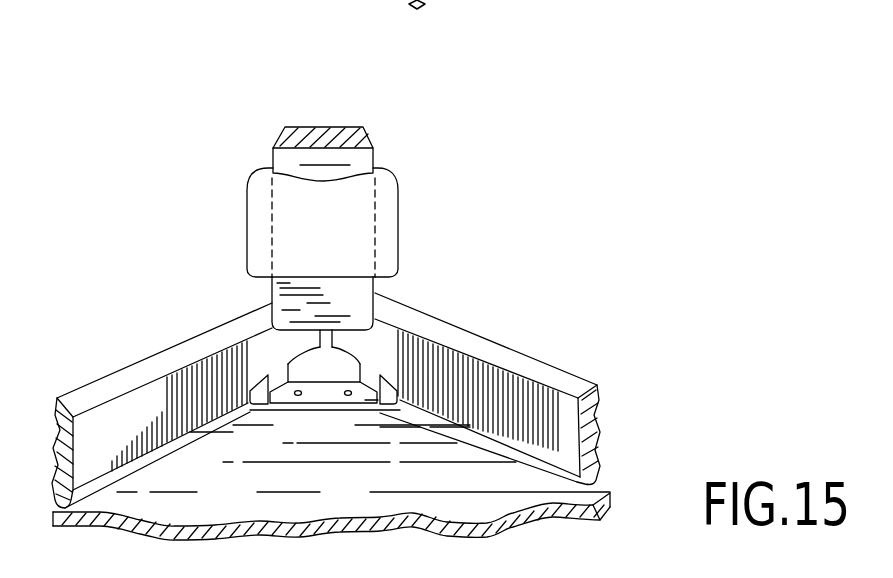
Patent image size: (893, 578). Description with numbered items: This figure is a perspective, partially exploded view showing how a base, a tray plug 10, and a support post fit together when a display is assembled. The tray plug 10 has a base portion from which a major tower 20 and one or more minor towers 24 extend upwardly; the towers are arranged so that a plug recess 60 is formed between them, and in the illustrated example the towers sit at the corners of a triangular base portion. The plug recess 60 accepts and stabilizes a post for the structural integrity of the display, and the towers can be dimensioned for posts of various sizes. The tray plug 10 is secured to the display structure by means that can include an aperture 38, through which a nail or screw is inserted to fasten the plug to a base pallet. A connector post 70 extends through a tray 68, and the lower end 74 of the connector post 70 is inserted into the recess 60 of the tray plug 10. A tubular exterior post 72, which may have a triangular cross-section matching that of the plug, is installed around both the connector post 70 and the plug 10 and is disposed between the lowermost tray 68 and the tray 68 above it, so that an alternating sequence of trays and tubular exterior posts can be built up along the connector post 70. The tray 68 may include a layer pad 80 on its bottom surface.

The tray plug 10 is at (268, 366).
The major tower 20 is at (327, 356).
The minor tower 24 is at (382, 386).
The aperture 38 is at (302, 396).
The plug recess 60 is at (365, 400).
The tray 68 is at (97, 390).
The connector post 70 is at (283, 140).
The tubular exterior post 72 is at (392, 215).
The lower end 74 is at (283, 313).
The layer pad 80 is at (247, 503).